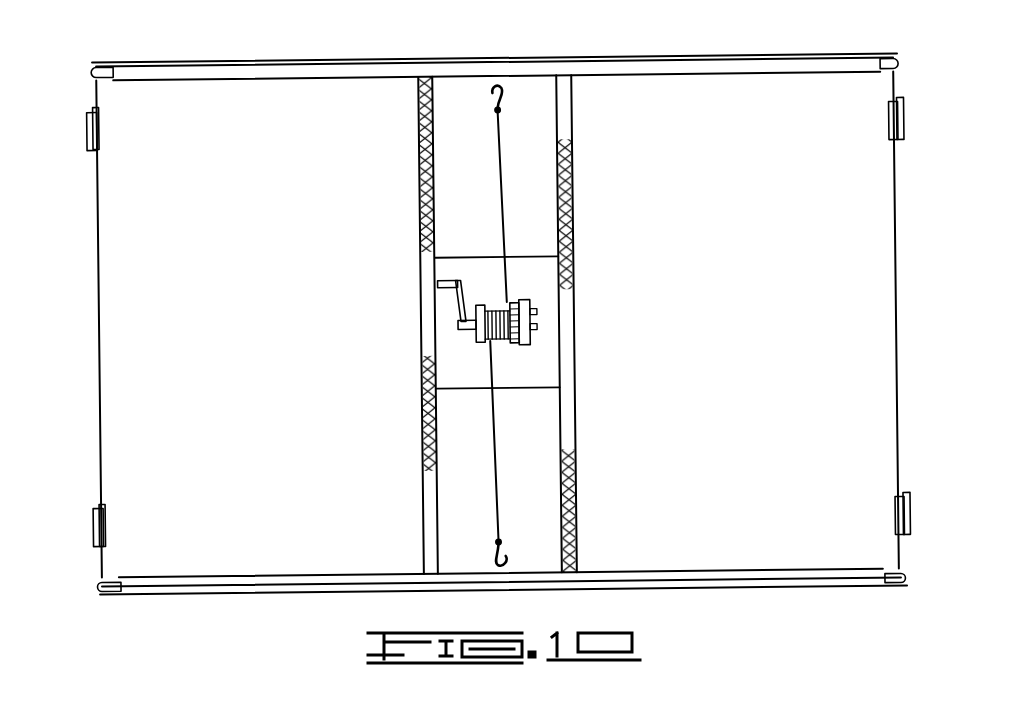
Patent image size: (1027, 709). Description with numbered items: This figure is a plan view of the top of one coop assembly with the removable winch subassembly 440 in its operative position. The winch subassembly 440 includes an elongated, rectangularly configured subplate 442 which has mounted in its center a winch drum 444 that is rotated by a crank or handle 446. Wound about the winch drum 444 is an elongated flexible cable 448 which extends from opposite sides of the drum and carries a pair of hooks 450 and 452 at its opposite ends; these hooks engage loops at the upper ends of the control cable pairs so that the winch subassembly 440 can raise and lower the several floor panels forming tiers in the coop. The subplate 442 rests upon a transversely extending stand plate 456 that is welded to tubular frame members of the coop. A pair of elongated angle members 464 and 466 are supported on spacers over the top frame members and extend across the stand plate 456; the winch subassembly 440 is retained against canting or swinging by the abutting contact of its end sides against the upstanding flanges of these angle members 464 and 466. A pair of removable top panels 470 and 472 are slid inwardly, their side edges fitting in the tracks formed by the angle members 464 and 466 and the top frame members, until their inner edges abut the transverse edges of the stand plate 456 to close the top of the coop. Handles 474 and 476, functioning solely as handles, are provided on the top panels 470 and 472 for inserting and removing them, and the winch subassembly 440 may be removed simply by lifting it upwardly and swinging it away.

The winch subassembly 440 is at (529, 250).
The subplate 442 is at (539, 413).
The winch drum 444 is at (489, 338).
The crank or handle 446 is at (440, 283).
The cable 448 is at (501, 172).
The hook 450 is at (497, 108).
The hook 452 is at (497, 545).
The stand plate 456 is at (567, 149).
The angle member 464 is at (232, 582).
The angle member 466 is at (251, 72).
The top panel 470 is at (257, 307).
The top panel 472 is at (752, 307).
The handle 474 is at (91, 515).
The handle 476 is at (89, 120).